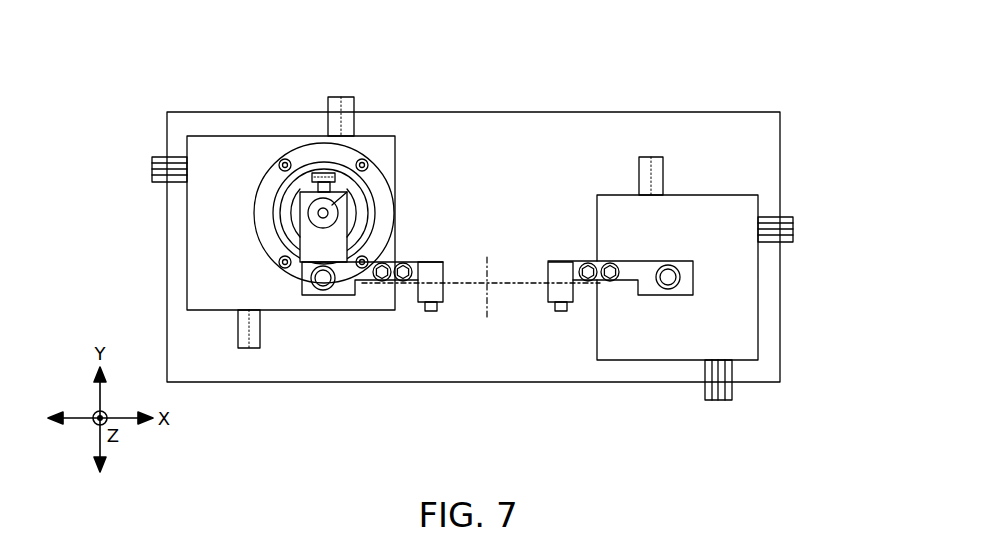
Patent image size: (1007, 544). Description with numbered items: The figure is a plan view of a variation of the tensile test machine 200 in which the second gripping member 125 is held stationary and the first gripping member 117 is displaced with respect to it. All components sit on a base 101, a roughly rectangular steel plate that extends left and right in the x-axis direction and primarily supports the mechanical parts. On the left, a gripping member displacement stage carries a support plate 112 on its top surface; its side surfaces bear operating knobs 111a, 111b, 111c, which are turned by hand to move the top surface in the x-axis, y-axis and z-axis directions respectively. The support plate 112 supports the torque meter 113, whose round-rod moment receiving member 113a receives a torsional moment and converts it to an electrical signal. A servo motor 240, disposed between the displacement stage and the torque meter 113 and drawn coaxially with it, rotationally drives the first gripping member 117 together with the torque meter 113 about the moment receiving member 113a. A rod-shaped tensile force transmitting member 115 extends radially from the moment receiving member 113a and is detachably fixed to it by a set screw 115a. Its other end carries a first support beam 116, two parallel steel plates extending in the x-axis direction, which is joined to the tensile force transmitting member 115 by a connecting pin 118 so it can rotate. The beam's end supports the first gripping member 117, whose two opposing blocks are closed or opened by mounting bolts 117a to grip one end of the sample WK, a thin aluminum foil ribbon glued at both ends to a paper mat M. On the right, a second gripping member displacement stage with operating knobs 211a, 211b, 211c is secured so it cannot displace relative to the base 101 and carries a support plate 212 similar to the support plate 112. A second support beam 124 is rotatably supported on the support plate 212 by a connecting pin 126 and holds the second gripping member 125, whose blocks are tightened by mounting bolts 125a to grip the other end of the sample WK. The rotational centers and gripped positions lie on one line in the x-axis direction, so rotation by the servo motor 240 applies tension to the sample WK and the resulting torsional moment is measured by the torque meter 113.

The tensile test machine 200 is at (176, 69).
The base 101 is at (553, 112).
The support plate 112 is at (201, 311).
The operating knob 111a is at (250, 348).
The operating knob 111b is at (152, 168).
The operating knob 111c is at (341, 97).
The servo motor 240 is at (354, 152).
The torque meter 113 is at (275, 213).
The moment receiving member 113a is at (347, 192).
The tensile force transmitting member 115 is at (292, 234).
The set screw 115a is at (322, 170).
The first support beam 116 is at (372, 289).
The first gripping member 117 is at (418, 294).
The mounting bolt 117a is at (430, 312).
The connecting pin 118 is at (323, 290).
The sample WK is at (481, 313).
The mat M is at (486, 276).
The second support beam 124 is at (620, 281).
The second gripping member 125 is at (560, 262).
The mounting bolt 125a is at (561, 312).
The connecting pin 126 is at (668, 265).
The support plate 212 is at (701, 195).
The operating knob 211a is at (718, 400).
The operating knob 211b is at (793, 231).
The operating knob 211c is at (639, 162).